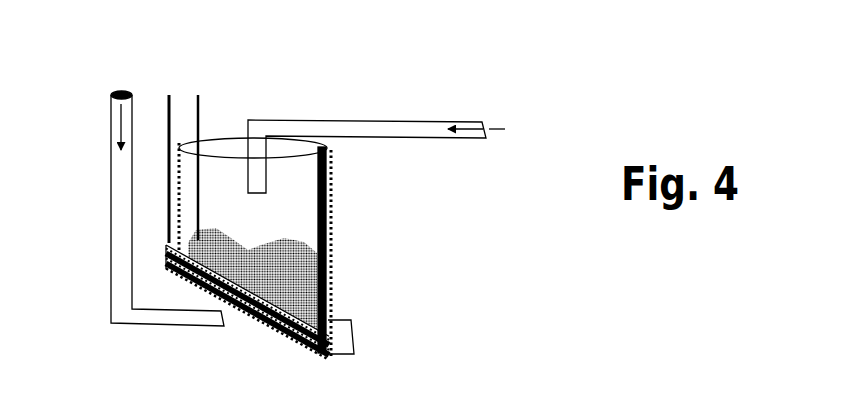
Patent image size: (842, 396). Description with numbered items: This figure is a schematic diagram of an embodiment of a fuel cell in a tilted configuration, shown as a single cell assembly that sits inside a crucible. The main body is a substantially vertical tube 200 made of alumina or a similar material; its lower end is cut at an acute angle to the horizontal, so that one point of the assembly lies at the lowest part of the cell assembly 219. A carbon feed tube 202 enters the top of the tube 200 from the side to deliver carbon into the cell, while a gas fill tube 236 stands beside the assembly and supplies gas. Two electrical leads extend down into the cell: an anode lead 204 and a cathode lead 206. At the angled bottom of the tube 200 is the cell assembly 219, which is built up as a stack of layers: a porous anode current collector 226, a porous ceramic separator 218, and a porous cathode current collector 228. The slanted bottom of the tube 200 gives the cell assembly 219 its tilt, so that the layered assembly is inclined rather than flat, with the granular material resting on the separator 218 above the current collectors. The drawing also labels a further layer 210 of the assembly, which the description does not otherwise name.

The substantially vertical tube 200 is at (327, 154).
The carbon feed tube 202 is at (466, 117).
The anode lead 204 is at (202, 122).
The cathode lead 206 is at (173, 83).
The liner layer 210 is at (330, 258).
The porous ceramic separator 218 is at (297, 242).
The cell assembly 219 is at (353, 334).
The porous anode current collector 226 is at (330, 292).
The porous cathode current collector 228 is at (297, 328).
The gas fill tube 236 is at (139, 208).